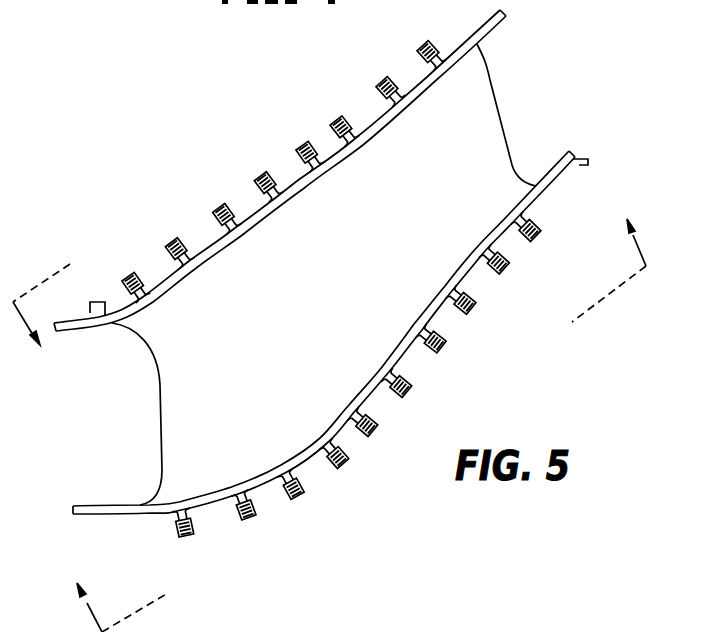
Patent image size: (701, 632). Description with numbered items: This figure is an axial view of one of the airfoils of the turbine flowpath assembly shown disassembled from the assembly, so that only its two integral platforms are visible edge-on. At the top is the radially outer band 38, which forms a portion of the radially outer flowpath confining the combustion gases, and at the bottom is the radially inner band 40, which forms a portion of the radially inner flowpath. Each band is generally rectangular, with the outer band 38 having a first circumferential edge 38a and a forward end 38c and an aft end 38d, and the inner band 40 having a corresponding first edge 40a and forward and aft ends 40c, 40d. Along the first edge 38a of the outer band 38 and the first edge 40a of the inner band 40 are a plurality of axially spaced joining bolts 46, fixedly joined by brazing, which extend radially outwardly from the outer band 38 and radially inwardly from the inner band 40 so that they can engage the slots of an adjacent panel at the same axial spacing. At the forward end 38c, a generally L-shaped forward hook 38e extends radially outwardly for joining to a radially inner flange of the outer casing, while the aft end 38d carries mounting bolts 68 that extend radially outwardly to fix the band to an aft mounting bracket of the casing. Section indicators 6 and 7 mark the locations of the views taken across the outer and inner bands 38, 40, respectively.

The radially outer band 38 is at (158, 280).
The first edge of outer band 38a is at (258, 222).
The forward end of outer band 38c is at (80, 318).
The aft end of outer band 38d is at (481, 24).
The forward hook 38e is at (103, 302).
The radially inner band 40 is at (266, 482).
The first edge of inner band 40a is at (336, 422).
The forward end of inner band 40c is at (114, 514).
The aft end of inner band 40d is at (568, 170).
The joining bolt 46 is at (262, 174).
The mounting bolt 68 is at (428, 45).
The section line 6- 6 is at (271, 189).
The section line 7- 7 is at (355, 413).